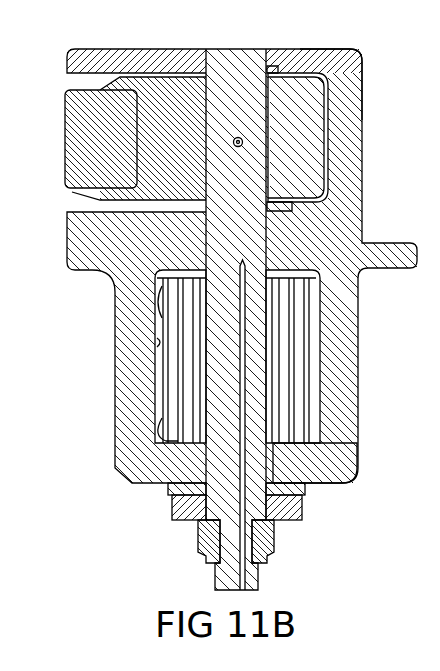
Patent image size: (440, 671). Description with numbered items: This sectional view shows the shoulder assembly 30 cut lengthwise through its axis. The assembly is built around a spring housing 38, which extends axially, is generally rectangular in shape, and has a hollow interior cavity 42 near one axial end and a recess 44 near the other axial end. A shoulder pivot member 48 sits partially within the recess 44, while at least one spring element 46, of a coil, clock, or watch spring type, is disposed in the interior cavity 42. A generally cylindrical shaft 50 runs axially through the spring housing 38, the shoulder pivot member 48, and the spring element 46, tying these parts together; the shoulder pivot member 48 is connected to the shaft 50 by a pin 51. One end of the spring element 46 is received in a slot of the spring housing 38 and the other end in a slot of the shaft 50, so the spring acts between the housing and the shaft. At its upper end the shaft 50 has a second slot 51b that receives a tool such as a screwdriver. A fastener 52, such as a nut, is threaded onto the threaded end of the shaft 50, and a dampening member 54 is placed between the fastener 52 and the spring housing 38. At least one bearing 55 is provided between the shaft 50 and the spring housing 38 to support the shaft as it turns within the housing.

The shoulder assembly 30 is at (362, 58).
The spring housing 38 is at (348, 155).
The interior cavity 42 is at (157, 350).
The recess 44 is at (70, 79).
The spring element 46 is at (303, 372).
The shoulder pivot member 48 is at (162, 88).
The shaft 50 is at (248, 67).
The pin 51 is at (243, 140).
The second slot 51b is at (237, 54).
The fastener 52 is at (277, 540).
The dampening member 54 is at (178, 508).
The bearing 55 is at (272, 53).